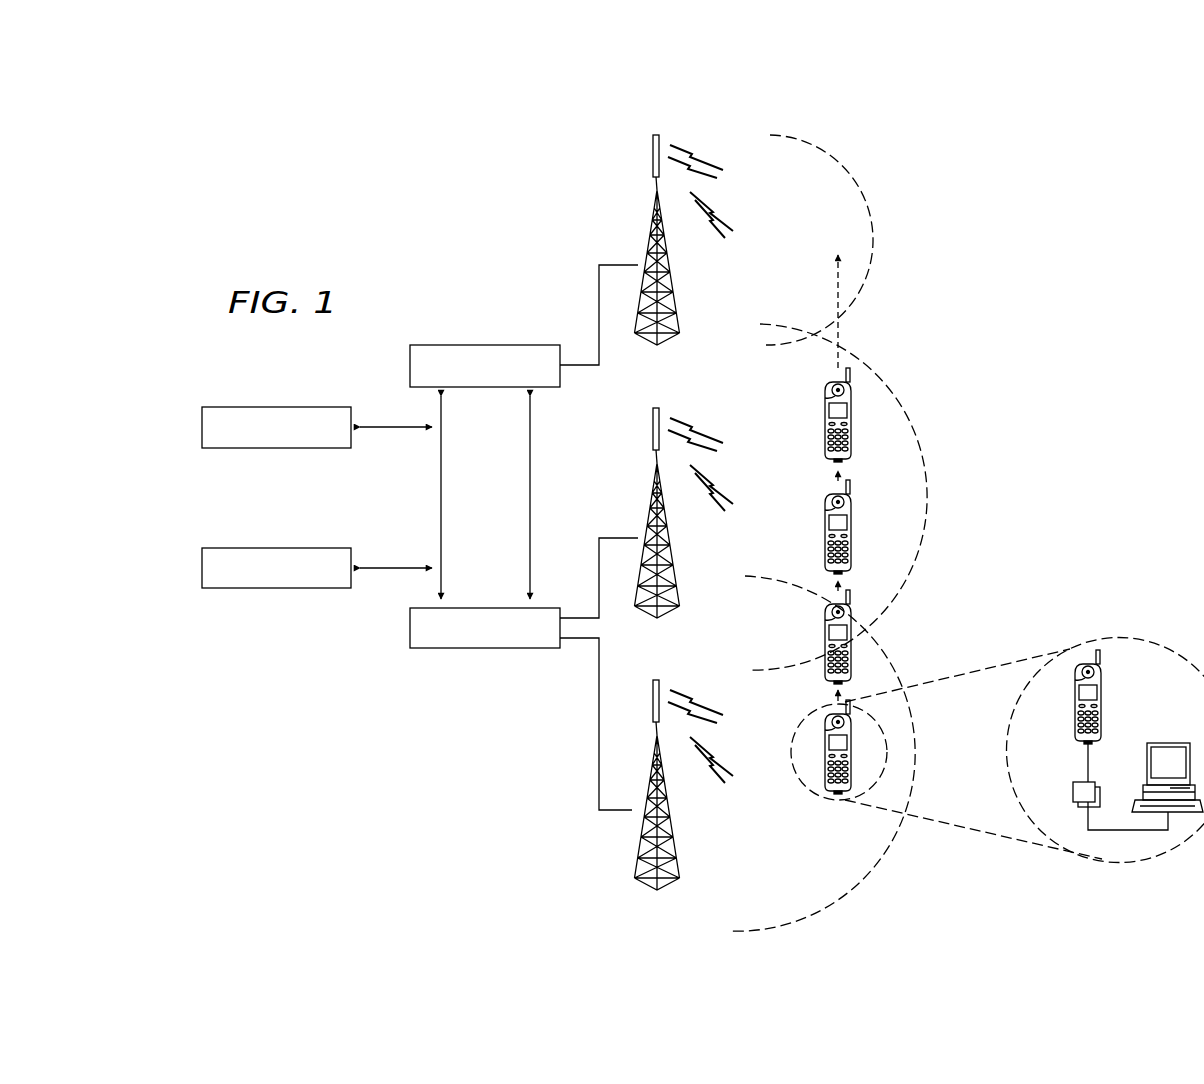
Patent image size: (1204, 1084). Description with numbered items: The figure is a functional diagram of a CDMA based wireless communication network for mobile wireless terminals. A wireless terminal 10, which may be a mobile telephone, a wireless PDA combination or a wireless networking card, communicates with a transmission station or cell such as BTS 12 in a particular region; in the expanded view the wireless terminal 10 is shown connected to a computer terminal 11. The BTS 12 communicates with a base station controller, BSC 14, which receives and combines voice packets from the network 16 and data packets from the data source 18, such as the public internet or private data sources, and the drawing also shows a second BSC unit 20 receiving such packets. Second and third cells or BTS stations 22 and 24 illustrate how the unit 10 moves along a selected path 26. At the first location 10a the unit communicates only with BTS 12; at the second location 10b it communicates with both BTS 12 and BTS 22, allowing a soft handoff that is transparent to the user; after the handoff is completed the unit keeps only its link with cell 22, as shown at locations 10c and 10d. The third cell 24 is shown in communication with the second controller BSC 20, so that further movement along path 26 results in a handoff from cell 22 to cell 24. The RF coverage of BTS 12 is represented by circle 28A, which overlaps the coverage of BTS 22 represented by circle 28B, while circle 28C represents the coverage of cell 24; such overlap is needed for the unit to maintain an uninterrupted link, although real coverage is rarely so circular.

The wireless terminal 10 is at (1075, 718).
The first location of wireless terminal 10a is at (827, 767).
The second location of wireless terminal 10b is at (826, 632).
The third location of wireless terminal 10c is at (826, 545).
The fourth location of wireless terminal 10d is at (826, 420).
The computer terminal 11 is at (1171, 743).
The BTS (base-station transceiver subsystem) 12 is at (653, 697).
The BSC (base station controller) 14 is at (490, 650).
The network 16 is at (203, 425).
The data source 18 is at (203, 570).
The second BSC unit 20 is at (480, 343).
The second BTS or cell station 22 is at (653, 425).
The third BTS or cell station 24 is at (653, 155).
The path 26 is at (836, 298).
The circle representing RF coverage of BTS 12 28A is at (890, 667).
The circle representing RF coverage of BTS 22 28B is at (907, 413).
The circle representing RF coverage of BTS 24 28C is at (868, 200).